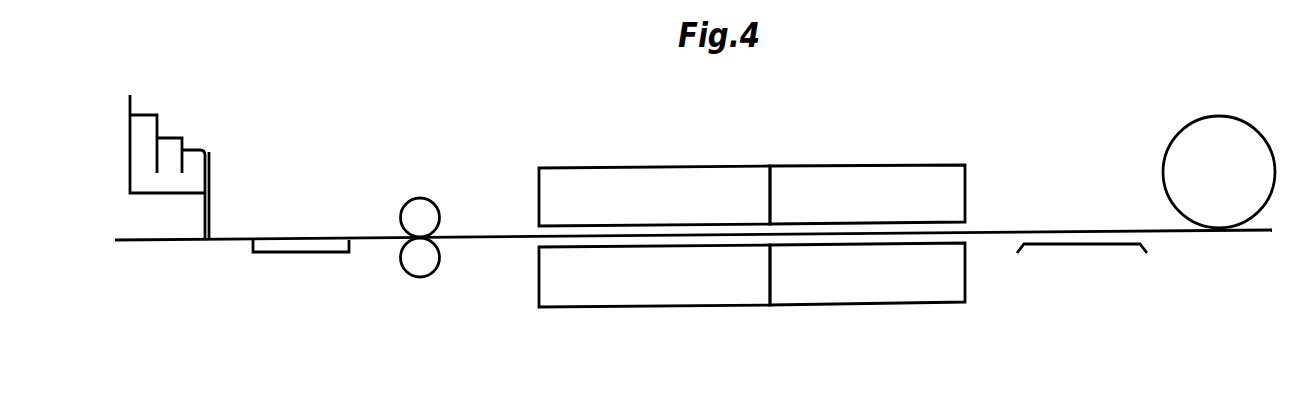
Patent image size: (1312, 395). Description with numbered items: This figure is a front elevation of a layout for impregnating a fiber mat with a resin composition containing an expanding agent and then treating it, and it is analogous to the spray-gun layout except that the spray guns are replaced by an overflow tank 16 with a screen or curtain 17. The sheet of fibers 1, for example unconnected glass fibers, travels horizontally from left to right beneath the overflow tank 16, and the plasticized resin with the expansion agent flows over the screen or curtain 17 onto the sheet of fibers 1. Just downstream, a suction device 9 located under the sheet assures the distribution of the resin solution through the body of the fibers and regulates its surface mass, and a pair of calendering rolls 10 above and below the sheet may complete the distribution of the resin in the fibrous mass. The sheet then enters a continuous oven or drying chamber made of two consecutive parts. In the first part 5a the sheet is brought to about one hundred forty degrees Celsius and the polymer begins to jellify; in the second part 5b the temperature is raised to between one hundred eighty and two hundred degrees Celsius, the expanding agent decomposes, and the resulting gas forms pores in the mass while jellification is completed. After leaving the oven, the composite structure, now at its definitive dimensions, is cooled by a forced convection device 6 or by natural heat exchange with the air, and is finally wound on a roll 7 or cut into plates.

The sheet of fibers 1 is at (178, 243).
The first part of the drying chamber 5a is at (635, 252).
The second part of the drying chamber 5b is at (837, 252).
The forced convection device 6 is at (1090, 245).
The roll 7 is at (1182, 135).
The suction device 9 is at (305, 253).
The calendering rolls 10 is at (428, 254).
The overflow tank 16 is at (141, 165).
The screen or curtain 17 is at (213, 196).